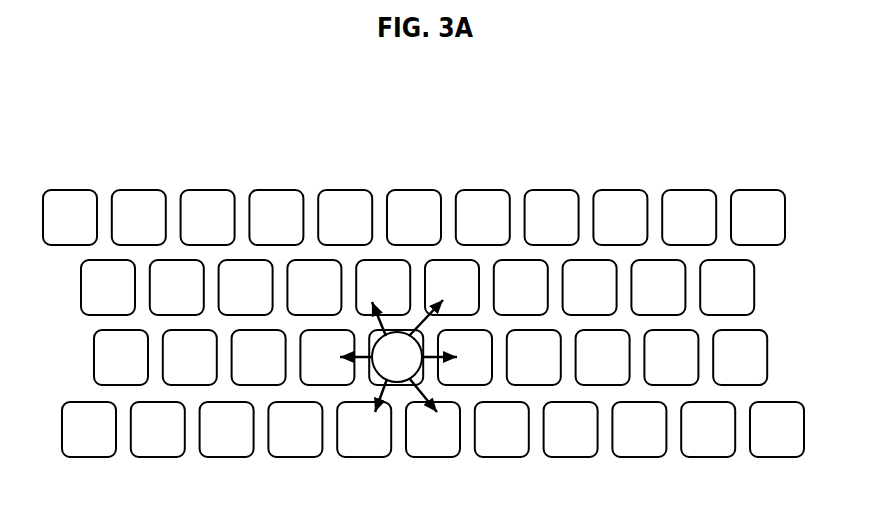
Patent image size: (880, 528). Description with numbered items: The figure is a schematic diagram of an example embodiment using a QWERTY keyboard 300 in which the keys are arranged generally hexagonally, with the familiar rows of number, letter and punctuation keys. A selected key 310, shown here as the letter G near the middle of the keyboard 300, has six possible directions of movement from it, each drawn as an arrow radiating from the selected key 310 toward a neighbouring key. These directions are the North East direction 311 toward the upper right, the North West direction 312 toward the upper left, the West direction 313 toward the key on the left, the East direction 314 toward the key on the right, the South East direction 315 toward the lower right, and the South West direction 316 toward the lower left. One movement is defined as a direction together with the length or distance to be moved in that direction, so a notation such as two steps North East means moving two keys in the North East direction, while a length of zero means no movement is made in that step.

The QWERTY keyboard 300 is at (173, 124).
The selected key 310 is at (402, 331).
The North East direction 311 is at (438, 302).
The North West direction 312 is at (383, 305).
The West direction 313 is at (352, 367).
The East direction 314 is at (456, 362).
The South East direction 315 is at (441, 412).
The South West direction 316 is at (388, 384).